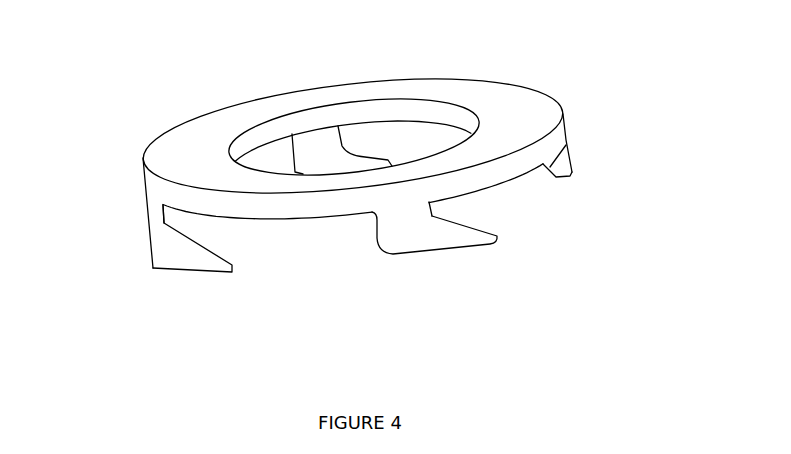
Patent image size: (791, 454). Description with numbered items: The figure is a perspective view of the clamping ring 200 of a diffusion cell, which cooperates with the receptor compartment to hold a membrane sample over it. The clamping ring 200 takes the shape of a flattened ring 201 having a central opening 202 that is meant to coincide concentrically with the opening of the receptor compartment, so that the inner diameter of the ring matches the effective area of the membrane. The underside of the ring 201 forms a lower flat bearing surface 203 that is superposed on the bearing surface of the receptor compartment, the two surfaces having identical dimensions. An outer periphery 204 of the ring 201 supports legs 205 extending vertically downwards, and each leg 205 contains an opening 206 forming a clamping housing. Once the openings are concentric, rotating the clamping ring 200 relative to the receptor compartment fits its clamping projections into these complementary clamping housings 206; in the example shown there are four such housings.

The clamping ring 200 is at (360, 175).
The flattened ring 201 is at (556, 89).
The central opening 202 is at (424, 127).
The lower flat bearing surface 203 is at (287, 229).
The outer periphery 204 is at (568, 139).
The leg 205 is at (313, 130).
The opening 206 is at (372, 125).